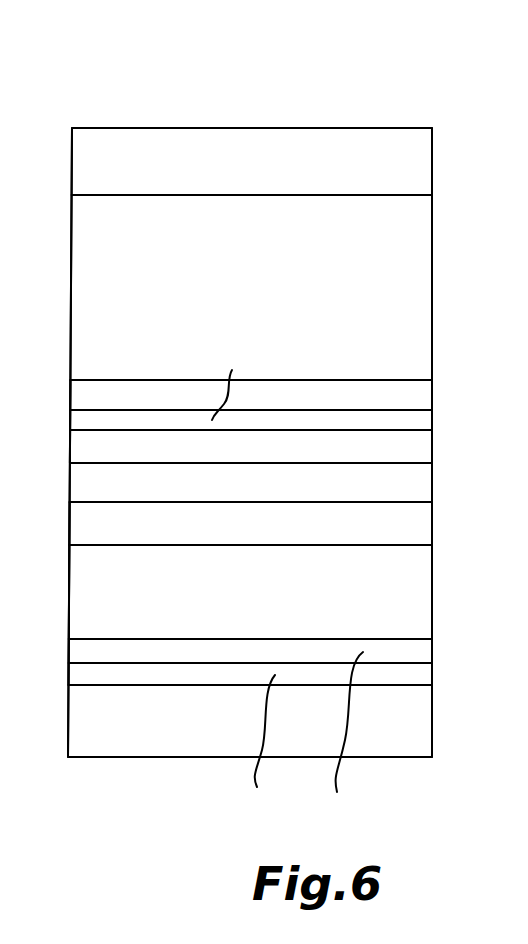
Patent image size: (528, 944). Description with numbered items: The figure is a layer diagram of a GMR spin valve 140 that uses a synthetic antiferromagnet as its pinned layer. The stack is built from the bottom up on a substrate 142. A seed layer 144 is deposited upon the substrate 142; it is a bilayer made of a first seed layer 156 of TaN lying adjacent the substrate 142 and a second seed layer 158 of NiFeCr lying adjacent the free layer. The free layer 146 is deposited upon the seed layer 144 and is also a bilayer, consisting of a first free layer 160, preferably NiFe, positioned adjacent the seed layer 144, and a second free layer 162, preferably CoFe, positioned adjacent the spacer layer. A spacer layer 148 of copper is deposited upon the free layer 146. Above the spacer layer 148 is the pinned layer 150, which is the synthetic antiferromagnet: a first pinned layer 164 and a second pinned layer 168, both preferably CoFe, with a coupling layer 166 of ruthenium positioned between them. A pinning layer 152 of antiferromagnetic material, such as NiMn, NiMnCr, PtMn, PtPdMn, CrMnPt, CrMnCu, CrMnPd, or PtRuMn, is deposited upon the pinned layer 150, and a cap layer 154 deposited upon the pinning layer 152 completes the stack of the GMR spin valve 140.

The GMR spin valve 140 is at (392, 100).
The substrate 142 is at (415, 718).
The seed layer 144 is at (440, 640).
The free layer 146 is at (440, 637).
The spacer layer 148 is at (418, 478).
The pinned layer 150 is at (440, 458).
The pinning layer 152 is at (420, 294).
The cap layer 154 is at (432, 164).
The first seed layer 156 is at (72, 675).
The second seed layer 158 is at (72, 650).
The first free layer 160 is at (73, 563).
The second free layer 162 is at (73, 522).
The first pinned layer 164 is at (73, 448).
The coupling layer 166 is at (73, 418).
The second pinned layer 168 is at (73, 394).